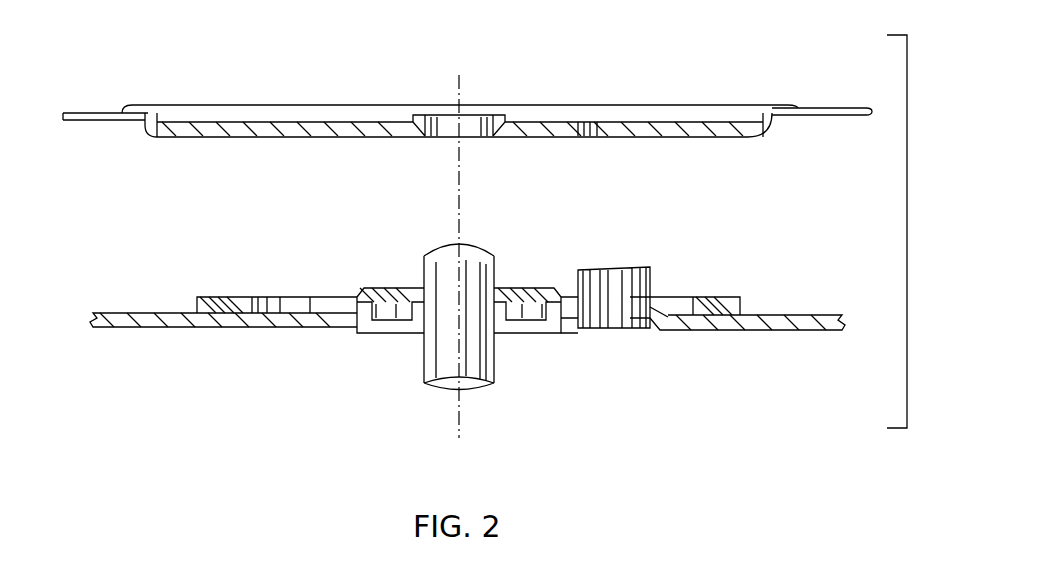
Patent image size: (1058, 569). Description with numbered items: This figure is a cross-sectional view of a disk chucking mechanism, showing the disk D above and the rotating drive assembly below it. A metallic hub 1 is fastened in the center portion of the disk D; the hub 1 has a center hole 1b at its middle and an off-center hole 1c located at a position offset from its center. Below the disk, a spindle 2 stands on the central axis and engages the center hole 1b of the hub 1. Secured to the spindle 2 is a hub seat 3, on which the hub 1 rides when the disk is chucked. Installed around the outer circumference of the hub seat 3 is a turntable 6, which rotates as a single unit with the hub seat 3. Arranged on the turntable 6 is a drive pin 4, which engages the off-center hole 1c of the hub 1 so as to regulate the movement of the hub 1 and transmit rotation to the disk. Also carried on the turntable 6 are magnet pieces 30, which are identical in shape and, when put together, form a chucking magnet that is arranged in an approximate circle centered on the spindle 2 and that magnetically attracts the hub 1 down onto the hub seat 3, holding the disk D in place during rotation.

The hub 1 is at (305, 128).
The center hole 1b is at (492, 120).
The off-center hole 1c is at (647, 125).
The spindle 2 is at (480, 367).
The hub seat 3 is at (378, 284).
The drive pin 4 is at (613, 268).
The turntable 6 is at (795, 323).
The magnet piece 30 is at (233, 302).
The disk D is at (837, 110).